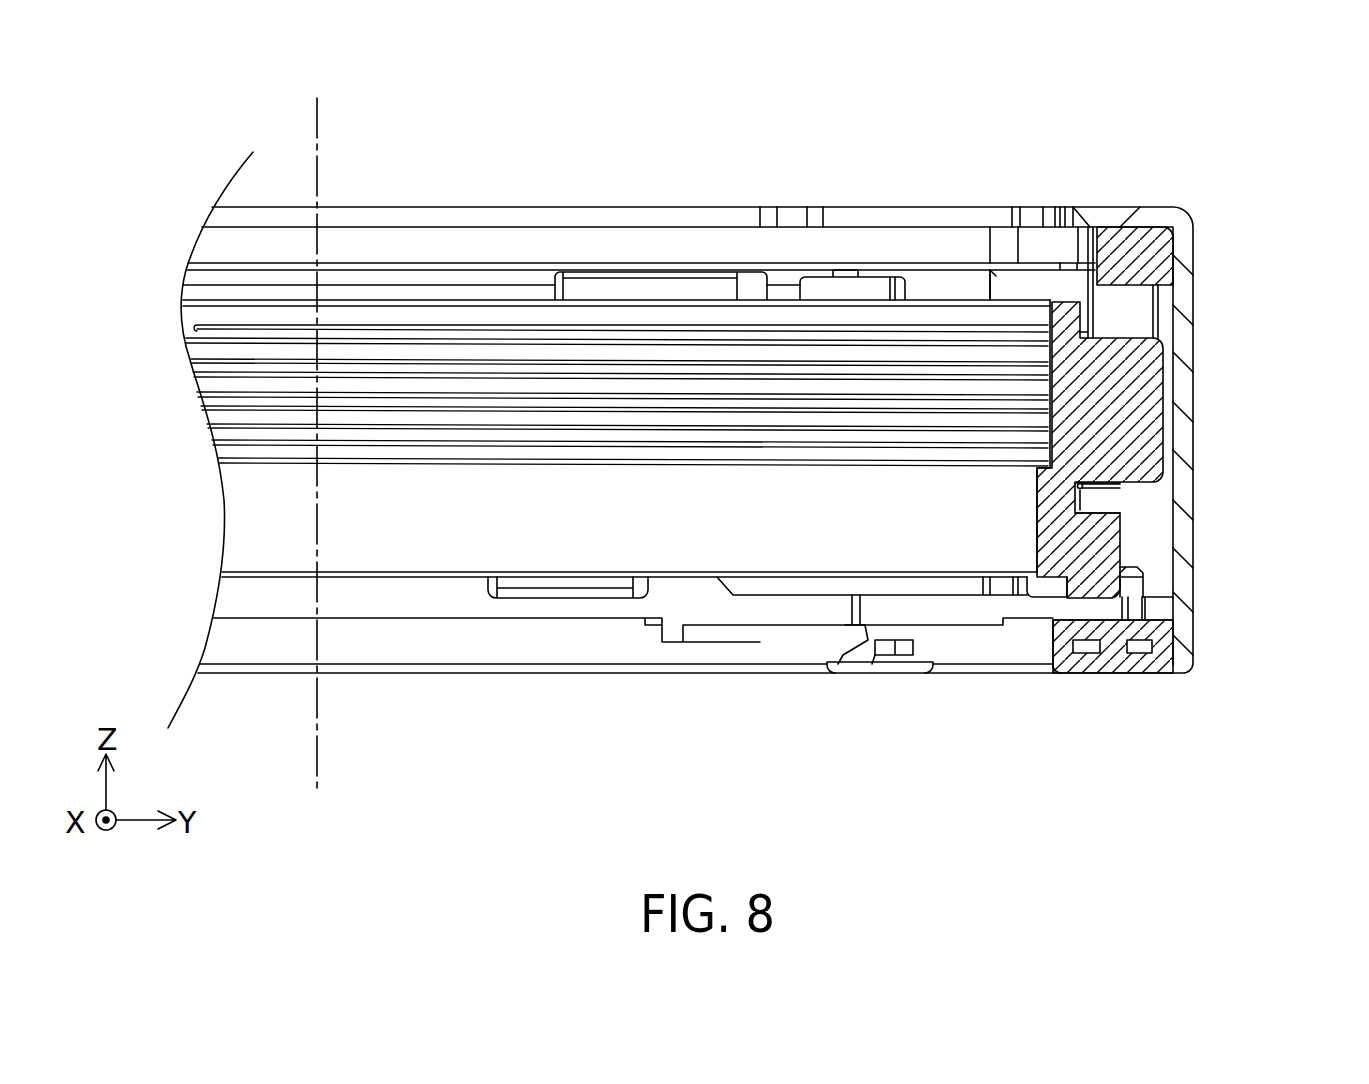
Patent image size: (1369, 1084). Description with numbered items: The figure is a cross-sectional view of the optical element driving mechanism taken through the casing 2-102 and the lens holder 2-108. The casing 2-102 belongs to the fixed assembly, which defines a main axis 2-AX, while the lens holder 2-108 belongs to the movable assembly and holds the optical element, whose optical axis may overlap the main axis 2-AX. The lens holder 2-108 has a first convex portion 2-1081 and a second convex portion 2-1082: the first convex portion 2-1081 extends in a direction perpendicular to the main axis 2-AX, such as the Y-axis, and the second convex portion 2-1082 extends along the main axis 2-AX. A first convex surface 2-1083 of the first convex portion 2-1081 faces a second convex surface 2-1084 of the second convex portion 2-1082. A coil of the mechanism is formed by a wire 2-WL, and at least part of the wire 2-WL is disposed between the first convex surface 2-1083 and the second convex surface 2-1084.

The main axis 2-AX is at (315, 426).
The casing 2-102 is at (1153, 213).
The lens holder 2-108 is at (1162, 440).
The first convex portion 2-1081 is at (1120, 400).
The second convex portion 2-1082 is at (1093, 590).
The first convex surface 2-1083 is at (1112, 486).
The second convex surface 2-1084 is at (1120, 500).
The wire 2-WL is at (1097, 503).